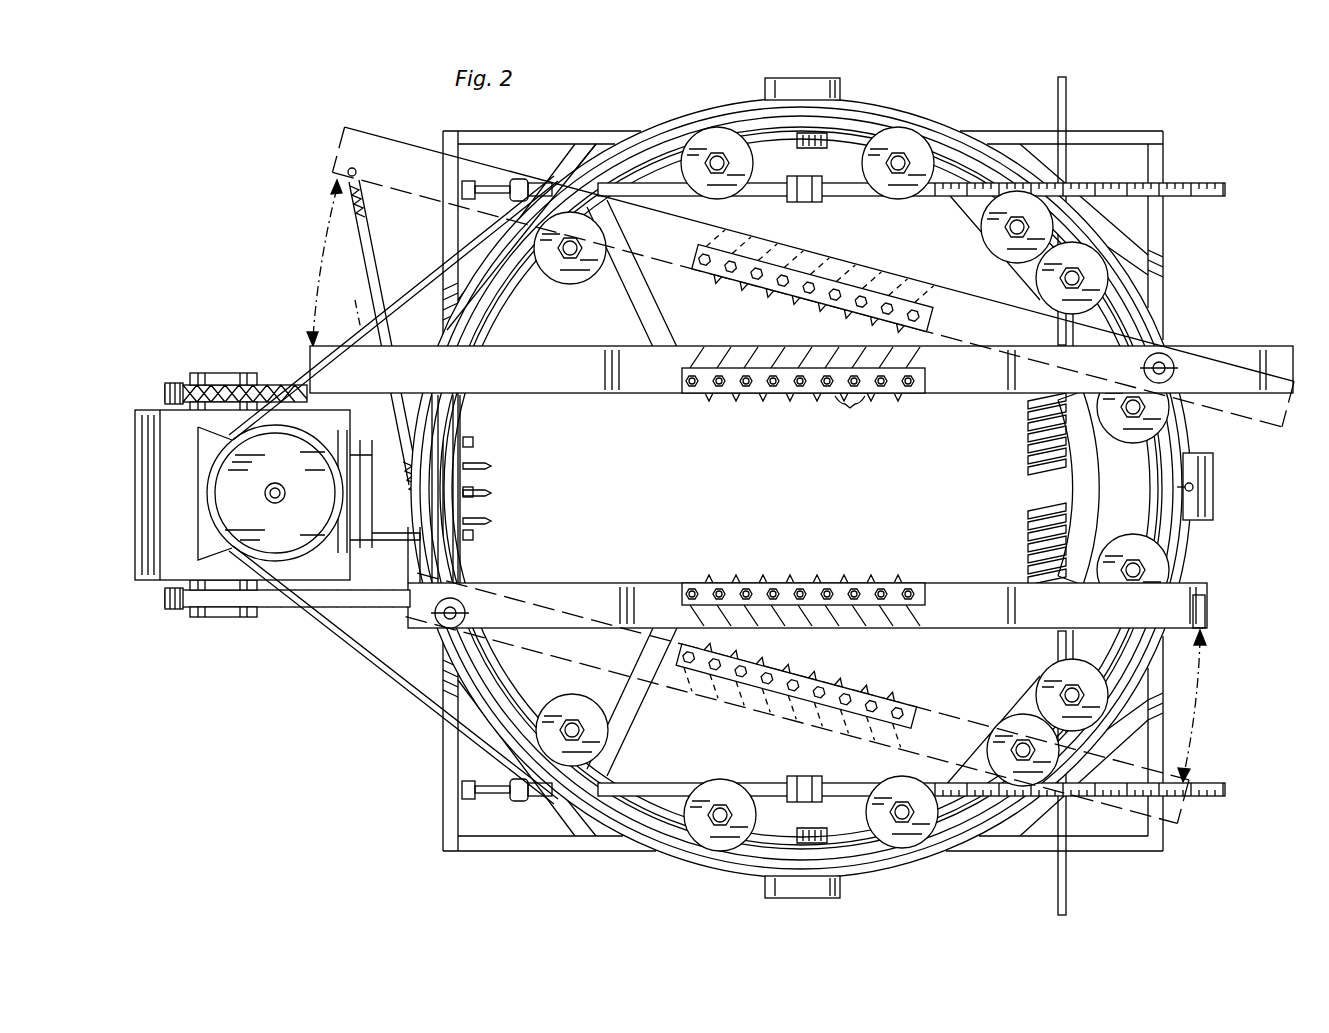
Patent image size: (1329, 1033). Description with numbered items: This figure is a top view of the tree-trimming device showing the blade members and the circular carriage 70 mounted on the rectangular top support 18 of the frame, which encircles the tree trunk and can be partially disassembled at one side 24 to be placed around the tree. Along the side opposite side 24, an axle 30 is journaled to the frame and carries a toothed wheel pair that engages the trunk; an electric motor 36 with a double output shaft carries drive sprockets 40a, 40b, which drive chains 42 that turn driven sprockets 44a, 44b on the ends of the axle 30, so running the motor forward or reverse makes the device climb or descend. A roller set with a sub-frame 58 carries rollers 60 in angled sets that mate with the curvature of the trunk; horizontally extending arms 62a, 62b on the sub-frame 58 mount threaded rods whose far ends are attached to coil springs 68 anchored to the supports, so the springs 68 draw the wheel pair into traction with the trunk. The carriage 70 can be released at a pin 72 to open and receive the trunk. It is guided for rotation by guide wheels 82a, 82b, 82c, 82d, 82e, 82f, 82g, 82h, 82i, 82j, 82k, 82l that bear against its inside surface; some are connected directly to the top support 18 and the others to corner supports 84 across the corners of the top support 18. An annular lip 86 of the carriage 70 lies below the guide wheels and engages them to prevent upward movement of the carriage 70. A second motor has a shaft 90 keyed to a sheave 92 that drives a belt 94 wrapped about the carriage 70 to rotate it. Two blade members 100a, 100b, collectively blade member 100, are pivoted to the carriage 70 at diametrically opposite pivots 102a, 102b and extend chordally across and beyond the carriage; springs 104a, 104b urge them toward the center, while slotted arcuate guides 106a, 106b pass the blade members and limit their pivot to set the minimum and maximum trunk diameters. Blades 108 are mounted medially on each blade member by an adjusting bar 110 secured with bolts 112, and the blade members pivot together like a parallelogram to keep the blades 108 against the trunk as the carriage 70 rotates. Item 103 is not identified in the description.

The top support 18 is at (447, 858).
The side of the frame 24 is at (1215, 676).
The axle 30 is at (492, 486).
The electric motor 36 is at (150, 582).
The drive sprocket 40a is at (162, 386).
The drive sprocket 40b is at (172, 608).
The drive chains 42 is at (267, 385).
The driven sprocket 44a is at (232, 373).
The driven sprocket 44b is at (222, 615).
The sub-frame 58 is at (1093, 503).
The rollers 60 is at (1024, 525).
The horizontally extending arm 62a is at (1070, 882).
The horizontally extending arm 62b is at (1066, 112).
The coil springs 68 is at (682, 198).
The circular carriage 70 is at (923, 860).
The pin 72 is at (1190, 487).
The guide wheel 82a is at (583, 277).
The guide wheel 82b is at (727, 197).
The guide wheel 82c is at (920, 197).
The guide wheel 82d is at (995, 232).
The guide wheel 82e is at (1038, 278).
The guide wheel 82f is at (1108, 432).
The guide wheel 82g is at (1166, 560).
The guide wheel 82h is at (1050, 668).
The guide wheel 82i is at (1012, 716).
The guide wheel 82j is at (880, 788).
The guide wheel 82k is at (743, 788).
The guide wheel 82l is at (609, 727).
The corner supports 84 is at (1160, 268).
The annular lip 86 is at (872, 112).
The motor shaft 90 is at (275, 500).
The sheave 92 is at (320, 500).
The belt 94 is at (370, 653).
The blade member 100 is at (700, 400).
The blade member 100a is at (987, 385).
The blade member 100b is at (987, 628).
The pivot 102a is at (1168, 360).
The pivot 102b is at (462, 605).
The spike pair 103 is at (850, 409).
The spring 104a is at (450, 430).
The spring 104b is at (1210, 500).
The arcuate guide 106a is at (500, 325).
The guide 106b is at (1206, 618).
The blades 108 is at (815, 548).
The adjusting bar 110 is at (745, 395).
The bolts 112 is at (688, 395).